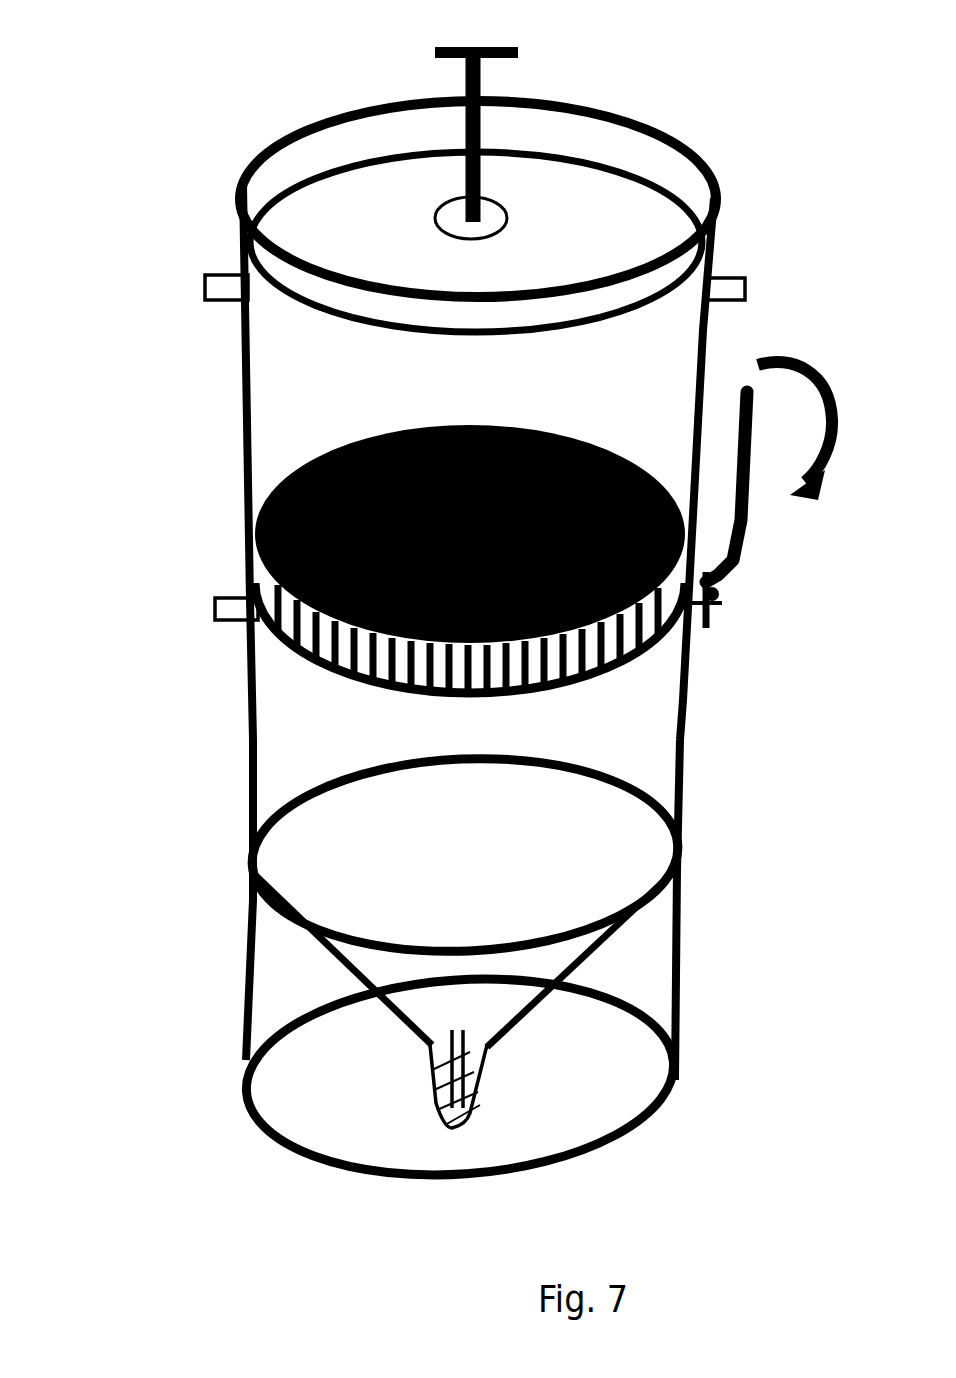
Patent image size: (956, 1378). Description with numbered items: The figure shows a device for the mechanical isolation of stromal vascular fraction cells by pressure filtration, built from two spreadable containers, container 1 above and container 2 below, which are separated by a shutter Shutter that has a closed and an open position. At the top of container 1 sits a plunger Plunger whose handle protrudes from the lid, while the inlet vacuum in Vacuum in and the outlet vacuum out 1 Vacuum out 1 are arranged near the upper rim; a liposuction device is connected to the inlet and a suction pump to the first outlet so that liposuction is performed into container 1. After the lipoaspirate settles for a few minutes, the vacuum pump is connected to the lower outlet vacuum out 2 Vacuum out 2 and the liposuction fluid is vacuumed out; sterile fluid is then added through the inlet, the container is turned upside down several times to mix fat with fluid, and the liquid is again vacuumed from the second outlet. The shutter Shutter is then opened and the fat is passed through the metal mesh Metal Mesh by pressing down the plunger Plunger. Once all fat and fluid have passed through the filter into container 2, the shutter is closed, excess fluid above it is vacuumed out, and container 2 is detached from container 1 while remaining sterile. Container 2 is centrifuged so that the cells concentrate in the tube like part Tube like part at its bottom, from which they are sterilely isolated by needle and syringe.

The container 1 is at (478, 420).
The container 2 is at (461, 939).
The plunger Plunger is at (558, 227).
The vacuum in Vacuum in is at (738, 278).
The vacuum out 1 Vacuum out 1 is at (213, 275).
The vacuum out 2 Vacuum out 2 is at (217, 598).
The metal mesh Metal Mesh is at (367, 435).
The shutter Shutter is at (761, 516).
The tube like part Tube like part is at (477, 1087).